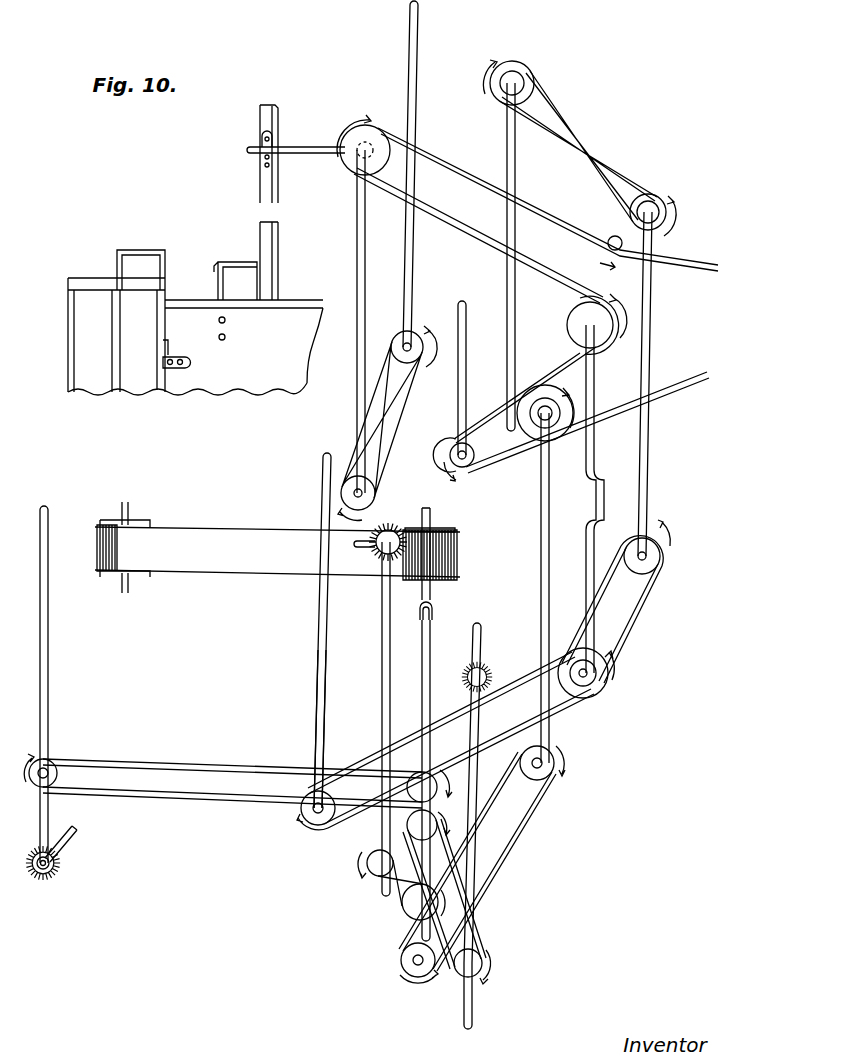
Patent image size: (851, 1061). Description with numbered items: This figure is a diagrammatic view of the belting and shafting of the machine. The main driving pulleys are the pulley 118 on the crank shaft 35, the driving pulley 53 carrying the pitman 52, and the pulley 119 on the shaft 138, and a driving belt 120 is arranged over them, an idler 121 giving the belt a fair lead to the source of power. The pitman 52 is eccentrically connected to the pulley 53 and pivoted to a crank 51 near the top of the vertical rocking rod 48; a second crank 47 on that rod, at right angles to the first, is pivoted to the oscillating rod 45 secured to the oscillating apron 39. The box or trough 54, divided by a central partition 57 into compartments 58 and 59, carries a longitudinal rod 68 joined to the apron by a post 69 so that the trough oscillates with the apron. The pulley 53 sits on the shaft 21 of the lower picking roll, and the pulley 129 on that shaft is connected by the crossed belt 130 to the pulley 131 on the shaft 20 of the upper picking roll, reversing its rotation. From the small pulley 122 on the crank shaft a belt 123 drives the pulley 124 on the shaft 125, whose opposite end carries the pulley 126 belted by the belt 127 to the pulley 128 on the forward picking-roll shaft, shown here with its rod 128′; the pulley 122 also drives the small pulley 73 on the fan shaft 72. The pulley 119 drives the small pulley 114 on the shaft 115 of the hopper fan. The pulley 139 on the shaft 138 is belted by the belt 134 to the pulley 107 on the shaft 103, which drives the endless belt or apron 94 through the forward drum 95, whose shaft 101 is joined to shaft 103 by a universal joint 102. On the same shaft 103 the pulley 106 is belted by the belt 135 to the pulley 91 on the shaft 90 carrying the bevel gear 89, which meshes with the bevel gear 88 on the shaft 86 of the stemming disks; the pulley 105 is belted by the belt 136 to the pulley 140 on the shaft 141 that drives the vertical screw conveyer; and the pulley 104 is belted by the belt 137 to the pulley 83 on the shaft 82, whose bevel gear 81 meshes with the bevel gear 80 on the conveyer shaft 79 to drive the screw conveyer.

The shaft 20 is at (408, 293).
The shaft 21 is at (358, 272).
The crank shaft 35 is at (585, 582).
The oscillating apron 39 is at (195, 347).
The oscillating rod 45 is at (222, 288).
The crank 47 is at (258, 258).
The rocking rod 48 is at (266, 190).
The crank 51 is at (262, 140).
The pitman rod 52 is at (306, 146).
The driving pulley 53 is at (368, 128).
The box or trough 54 is at (85, 278).
The central partition 57 is at (116, 392).
The compartment 58 is at (85, 382).
The compartment 59 is at (157, 395).
The longitudinal rod 68 is at (160, 297).
The post 69 is at (170, 345).
The shaft 72 is at (320, 712).
The driving pulley 73 is at (300, 810).
The shaft 79 is at (78, 835).
The bevel gear 80 is at (62, 866).
The bevel gear 81 is at (57, 875).
The shaft 82 is at (50, 712).
The driving pulley 83 is at (55, 768).
The shaft 86 is at (362, 550).
The bevel gear 88 is at (374, 527).
The bevel gear 89 is at (402, 520).
The shaft 90 is at (382, 645).
The driving pulley 91 is at (368, 880).
The endless belt or apron 94 is at (252, 535).
The drum 95 is at (150, 575).
The shaft 101 is at (435, 520).
The universal joint 102 is at (437, 614).
The shaft 103 is at (418, 693).
The driving pulley 104 is at (440, 792).
The driving pulley 105 is at (440, 826).
The driving pulley 106 is at (405, 910).
The driving pulley 107 is at (410, 962).
The driving pulley 114 is at (450, 449).
The shaft 115 is at (465, 376).
The pulley 118 is at (606, 326).
The pulley 119 is at (543, 388).
The driving belt 120 is at (560, 226).
The idler 121 is at (606, 238).
The small pulley 122 is at (590, 688).
The belt 123 is at (628, 640).
The pulley 124 is at (655, 568).
The shaft 125 is at (648, 462).
The pulley 126 is at (656, 195).
The belt 127 is at (600, 150).
The pulley 128 is at (520, 78).
The rod 128′ is at (506, 152).
The pulley 129 is at (322, 470).
The belt 130 is at (382, 413).
The pulley 131 is at (418, 360).
The belt 134 is at (492, 880).
The belt 135 is at (405, 884).
The belt 136 is at (482, 936).
The belt 137 is at (165, 763).
The shaft 138 is at (541, 548).
The pulley 139 is at (556, 775).
The pulley 140 is at (460, 976).
The shaft 141 is at (472, 1010).